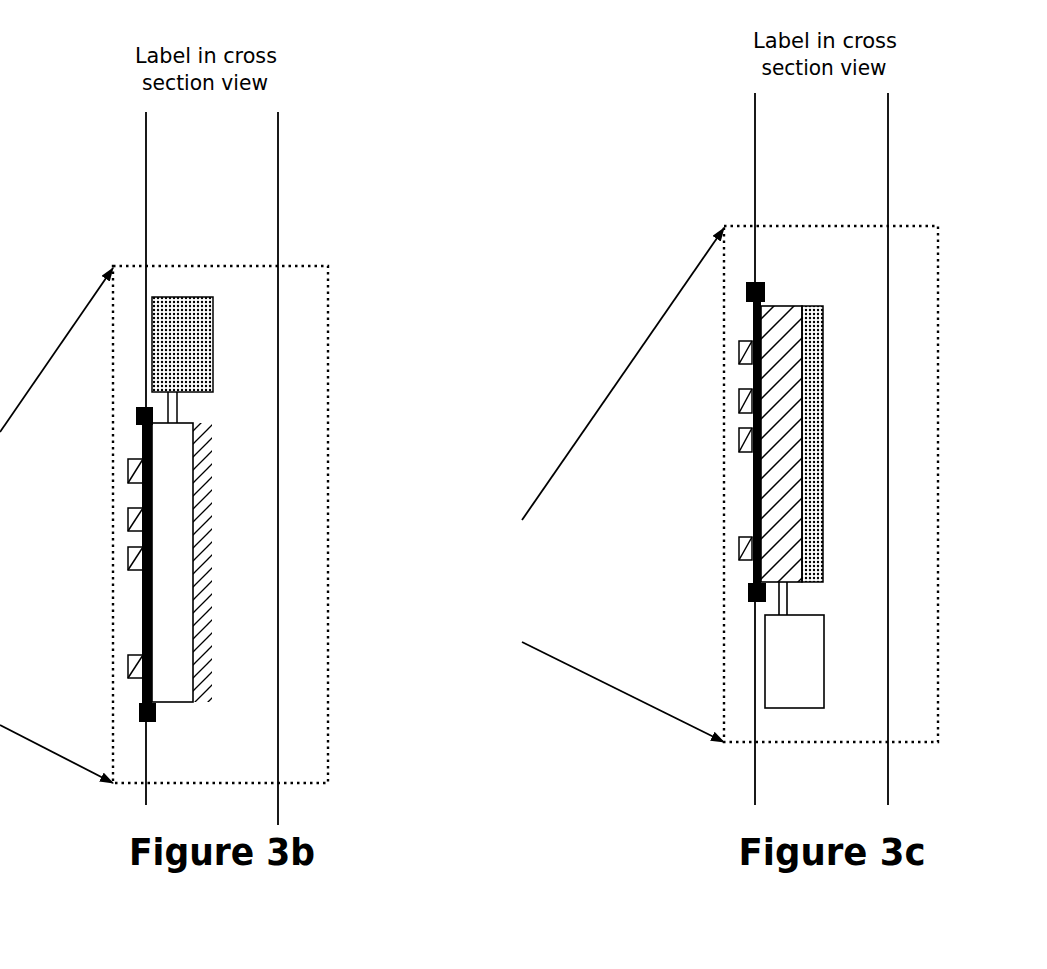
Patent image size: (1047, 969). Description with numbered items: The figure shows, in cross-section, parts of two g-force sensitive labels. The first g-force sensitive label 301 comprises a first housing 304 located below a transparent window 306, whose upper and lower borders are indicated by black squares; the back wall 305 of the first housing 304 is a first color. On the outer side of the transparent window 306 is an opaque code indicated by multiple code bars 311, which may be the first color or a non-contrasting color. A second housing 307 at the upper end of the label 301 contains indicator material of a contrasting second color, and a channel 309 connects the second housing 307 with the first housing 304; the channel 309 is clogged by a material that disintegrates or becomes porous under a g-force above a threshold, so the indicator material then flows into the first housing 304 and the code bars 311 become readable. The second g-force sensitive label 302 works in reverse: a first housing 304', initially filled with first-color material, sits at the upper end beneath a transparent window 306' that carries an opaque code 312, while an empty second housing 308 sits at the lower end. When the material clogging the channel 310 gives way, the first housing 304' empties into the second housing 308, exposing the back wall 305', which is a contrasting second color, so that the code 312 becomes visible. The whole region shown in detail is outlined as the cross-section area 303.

In FIG. 3b, the g-force sensitive label 301 is at (235, 198).
In FIG. 3c, the g-force sensitive label 302 is at (860, 147).
In FIG. 3b, the cross-section detail region 303 is at (328, 585).
In FIG. 3c, the cross-section detail region 303 is at (938, 463).
In FIG. 3b, the first housing 304 is at (118, 562).
In FIG. 3c, the first housing 304' is at (723, 444).
In FIG. 3b, the back wall 305 is at (303, 543).
In FIG. 3c, the back wall 305' is at (914, 423).
In FIG. 3b, the transparent window 306 is at (93, 564).
In FIG. 3c, the transparent window 306' is at (700, 442).
In FIG. 3b, the second housing 307 is at (200, 346).
In FIG. 3c, the second housing 308 is at (806, 687).
In FIG. 3b, the channel 309 is at (166, 412).
In FIG. 3c, the channel 310 is at (777, 603).
In FIG. 3b, the code bars 311 is at (128, 470).
In FIG. 3c, the code 312 is at (741, 351).